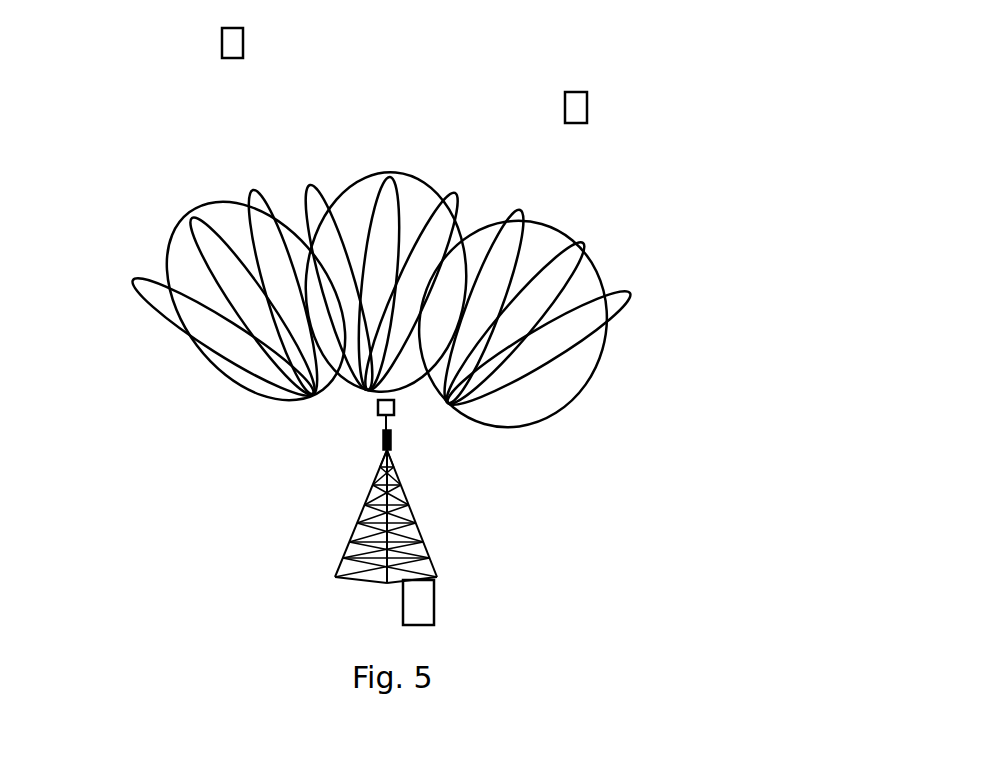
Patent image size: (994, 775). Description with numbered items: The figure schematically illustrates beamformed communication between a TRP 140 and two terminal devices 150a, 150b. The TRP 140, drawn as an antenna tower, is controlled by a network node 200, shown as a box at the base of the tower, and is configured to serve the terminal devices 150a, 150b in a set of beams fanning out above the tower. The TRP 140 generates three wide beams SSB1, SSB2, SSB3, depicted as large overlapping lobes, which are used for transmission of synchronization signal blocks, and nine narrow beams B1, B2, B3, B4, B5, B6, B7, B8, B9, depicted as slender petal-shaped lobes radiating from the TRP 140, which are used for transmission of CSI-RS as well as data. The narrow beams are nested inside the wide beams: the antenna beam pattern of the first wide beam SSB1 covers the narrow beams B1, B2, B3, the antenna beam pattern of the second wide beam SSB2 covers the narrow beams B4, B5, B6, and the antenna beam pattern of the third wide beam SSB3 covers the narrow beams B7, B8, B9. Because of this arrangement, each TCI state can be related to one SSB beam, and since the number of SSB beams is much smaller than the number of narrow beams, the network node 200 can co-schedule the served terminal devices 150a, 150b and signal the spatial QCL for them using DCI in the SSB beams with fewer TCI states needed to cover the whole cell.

The terminal device 150a is at (222, 38).
The terminal device 150b is at (587, 103).
The TRP 140 is at (378, 408).
The network node 200 is at (410, 604).
The wide beam SSB1 is at (168, 252).
The wide beam SSB2 is at (452, 142).
The wide beam SSB3 is at (598, 262).
The narrow beam B1 is at (223, 337).
The narrow beam B2 is at (252, 305).
The narrow beam B3 is at (283, 292).
The narrow beam B4 is at (339, 287).
The narrow beam B5 is at (379, 283).
The narrow beam B6 is at (411, 291).
The narrow beam B7 is at (484, 306).
The narrow beam B8 is at (515, 323).
The narrow beam B9 is at (539, 348).